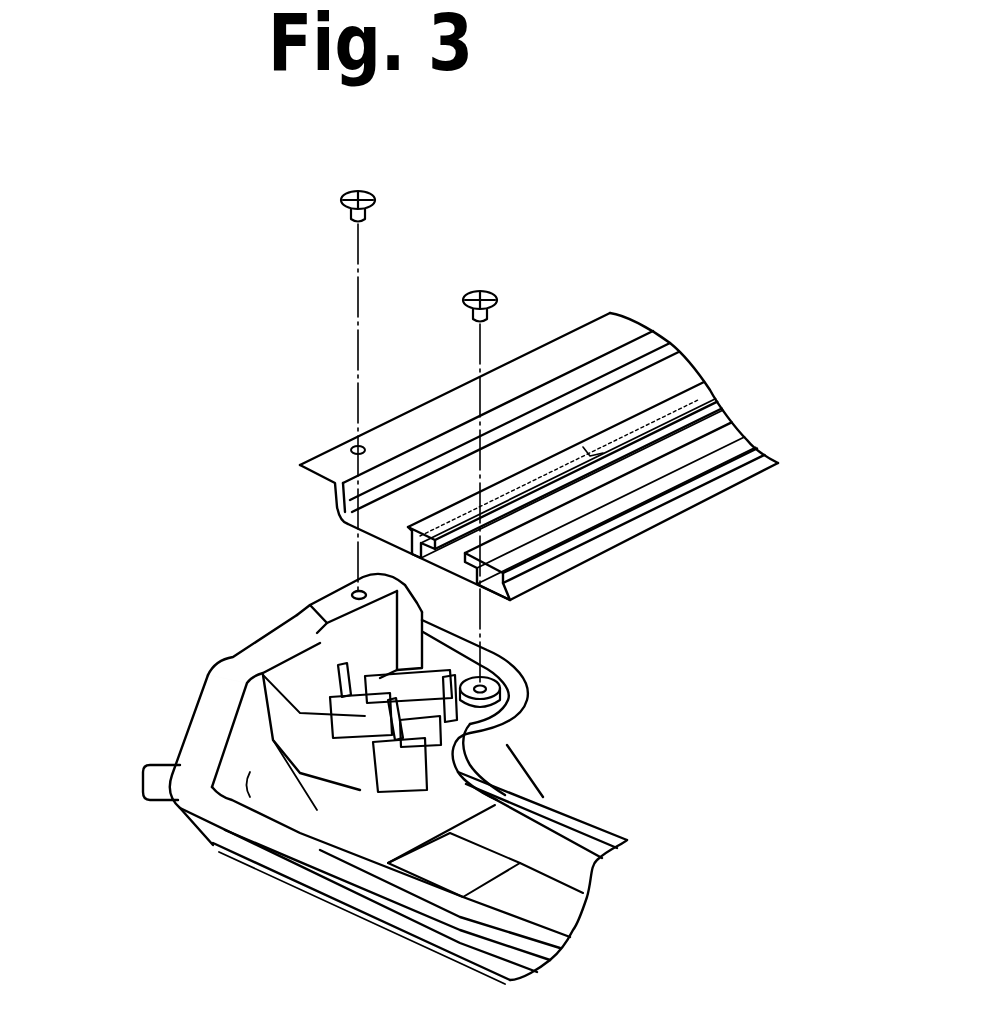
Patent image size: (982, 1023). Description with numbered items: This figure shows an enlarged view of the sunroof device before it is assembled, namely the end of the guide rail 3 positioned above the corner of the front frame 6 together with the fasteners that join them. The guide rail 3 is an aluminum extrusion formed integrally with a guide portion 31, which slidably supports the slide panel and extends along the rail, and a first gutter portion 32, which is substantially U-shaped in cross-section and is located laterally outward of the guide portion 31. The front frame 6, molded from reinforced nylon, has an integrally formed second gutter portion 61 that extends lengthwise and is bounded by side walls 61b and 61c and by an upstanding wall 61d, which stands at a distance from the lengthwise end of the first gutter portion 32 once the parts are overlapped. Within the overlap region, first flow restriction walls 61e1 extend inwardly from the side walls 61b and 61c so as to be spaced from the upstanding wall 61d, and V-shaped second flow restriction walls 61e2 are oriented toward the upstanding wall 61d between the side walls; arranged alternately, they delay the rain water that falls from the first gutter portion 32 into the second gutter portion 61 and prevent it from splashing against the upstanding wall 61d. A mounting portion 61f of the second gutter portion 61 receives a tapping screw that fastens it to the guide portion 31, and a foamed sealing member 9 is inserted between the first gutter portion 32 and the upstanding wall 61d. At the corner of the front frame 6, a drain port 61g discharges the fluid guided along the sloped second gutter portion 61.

The guide rail 3 is at (571, 326).
The guide portion 31 is at (703, 423).
The first gutter portion 32 is at (670, 387).
The front frame 6 is at (325, 903).
The second gutter portion 61 is at (317, 825).
The side wall 61b is at (455, 785).
The side wall 61c is at (287, 672).
The upstanding wall 61d is at (423, 657).
The first flow restriction walls 61e1 is at (335, 712).
The second flow restriction walls 61e2 is at (413, 700).
The mounting portion 61f is at (500, 690).
The drain port 61g is at (150, 788).
The foamed sealing member 9 is at (327, 600).